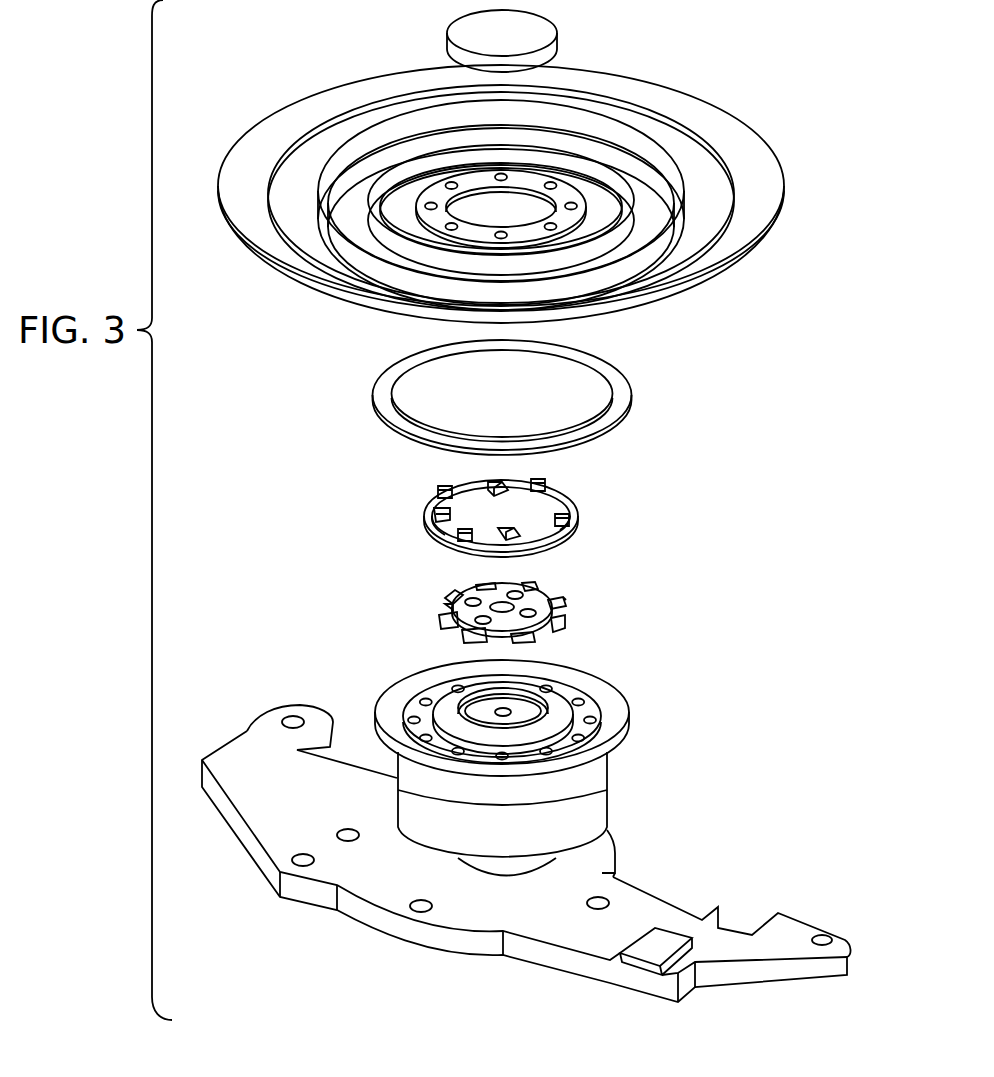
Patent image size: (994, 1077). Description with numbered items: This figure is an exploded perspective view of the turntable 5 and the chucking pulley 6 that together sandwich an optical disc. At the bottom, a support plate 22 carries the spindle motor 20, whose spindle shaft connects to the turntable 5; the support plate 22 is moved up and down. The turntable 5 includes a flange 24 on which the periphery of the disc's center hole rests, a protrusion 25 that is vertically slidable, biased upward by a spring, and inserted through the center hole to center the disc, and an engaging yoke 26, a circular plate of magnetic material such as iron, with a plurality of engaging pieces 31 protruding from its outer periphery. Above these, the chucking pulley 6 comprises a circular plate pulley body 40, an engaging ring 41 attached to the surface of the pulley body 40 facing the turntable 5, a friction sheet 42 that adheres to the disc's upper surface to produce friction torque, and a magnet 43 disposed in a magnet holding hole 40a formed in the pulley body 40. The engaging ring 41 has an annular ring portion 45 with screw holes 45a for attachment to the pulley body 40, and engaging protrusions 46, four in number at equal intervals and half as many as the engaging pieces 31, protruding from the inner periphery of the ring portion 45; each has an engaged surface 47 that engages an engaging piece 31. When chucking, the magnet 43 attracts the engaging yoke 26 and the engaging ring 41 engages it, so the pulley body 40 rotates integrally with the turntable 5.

The turntable 5 is at (526, 802).
The chucking pulley 6 is at (501, 232).
The spindle motor 20 is at (569, 814).
The support plate 22 is at (526, 853).
The flange 24 is at (549, 722).
The protrusion 25 is at (572, 718).
The engaging yoke 26 is at (485, 614).
The engaging pieces 31 is at (485, 610).
The pulley body 40 is at (501, 175).
The magnet holding hole 40a is at (475, 138).
The engaging ring 41 is at (518, 513).
The friction sheet 42 is at (511, 389).
The magnet 43 is at (535, 40).
The ring portion 45 is at (464, 521).
The screw holes 45a is at (519, 545).
The engaging protrusions 46 is at (504, 512).
The engaged surface 47 is at (427, 492).